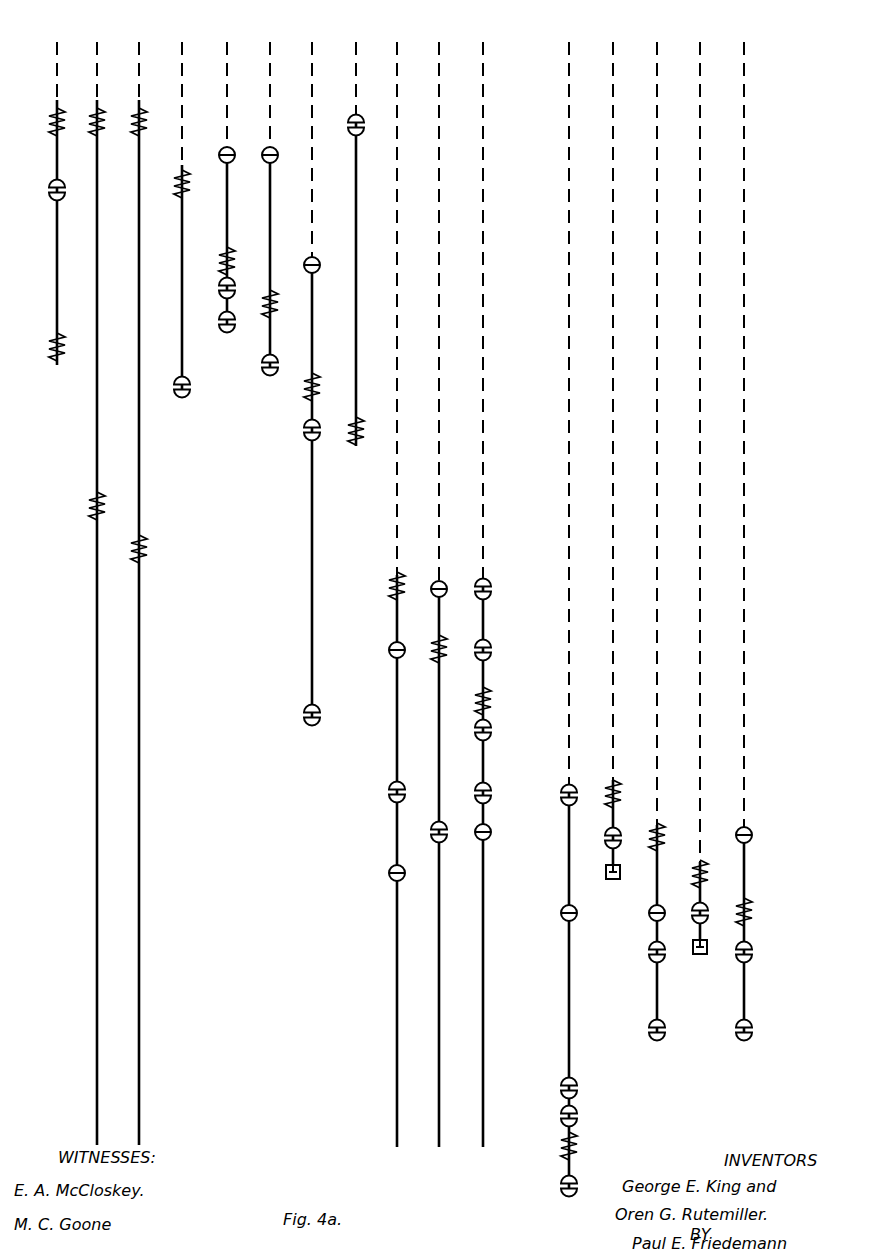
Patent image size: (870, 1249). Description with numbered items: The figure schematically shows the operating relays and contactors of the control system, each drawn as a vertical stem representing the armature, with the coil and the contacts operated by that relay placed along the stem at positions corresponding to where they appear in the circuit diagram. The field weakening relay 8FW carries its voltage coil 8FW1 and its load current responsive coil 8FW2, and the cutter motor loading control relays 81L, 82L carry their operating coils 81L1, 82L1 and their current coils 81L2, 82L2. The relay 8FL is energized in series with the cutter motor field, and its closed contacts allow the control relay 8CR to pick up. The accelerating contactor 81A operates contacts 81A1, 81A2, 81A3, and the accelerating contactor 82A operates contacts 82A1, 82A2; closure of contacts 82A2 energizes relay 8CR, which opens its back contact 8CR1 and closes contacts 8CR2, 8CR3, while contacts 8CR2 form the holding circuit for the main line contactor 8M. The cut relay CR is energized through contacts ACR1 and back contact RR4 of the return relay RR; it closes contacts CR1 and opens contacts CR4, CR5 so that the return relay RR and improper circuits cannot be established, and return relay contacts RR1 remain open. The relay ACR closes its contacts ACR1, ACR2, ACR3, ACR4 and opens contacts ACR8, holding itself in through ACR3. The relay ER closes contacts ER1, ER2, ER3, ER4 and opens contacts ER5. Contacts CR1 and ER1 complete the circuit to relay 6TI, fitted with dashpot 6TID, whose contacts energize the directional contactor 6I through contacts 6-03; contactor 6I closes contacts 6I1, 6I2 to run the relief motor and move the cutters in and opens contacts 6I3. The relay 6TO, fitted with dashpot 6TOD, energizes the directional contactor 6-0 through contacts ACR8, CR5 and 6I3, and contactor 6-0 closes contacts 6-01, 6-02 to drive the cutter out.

The field weakening relay 8FW is at (42, 208).
The voltage coil of relay 8FW 8FW1 is at (53, 362).
The current coil of relay 8FW 8FW2 is at (56, 136).
The cutter motor loading control relay 81L is at (98, 581).
The operating coil of relay 81L 81L1 is at (89, 507).
The load current responsive coil of relay 81L 81L2 is at (99, 137).
The cutter motor loading control relay 82L is at (139, 581).
The operating coil of relay 82L 82L1 is at (147, 550).
The load current responsive coil of relay 82L 82L2 is at (142, 137).
The field loss relay 8FL is at (174, 400).
The accelerating contactor 81A is at (231, 258).
The contacts of contactor 81A 81A1 is at (243, 282).
The contacts of contactor 81A 81A2 is at (226, 331).
The contacts of contactor 81A 81A3 is at (230, 149).
The accelerating contactor 82A is at (282, 320).
The contacts of contactor 82A 82A1 is at (279, 154).
The contacts of contactor 82A 82A2 is at (274, 382).
The control relay 8CR is at (316, 384).
The back contact of relay 8CR 8CR1 is at (318, 263).
The contacts of relay 8CR 8CR2 is at (303, 431).
The contacts of relay 8CR 8CR3 is at (308, 724).
The main line contactor 8M is at (364, 458).
The cut relay CR is at (374, 605).
The contacts of cut relay CR CR1 is at (390, 793).
The contacts of cut relay CR CR4 is at (390, 653).
The contacts of cut relay CR CR5 is at (389, 873).
The return relay RR is at (444, 652).
The contacts of return relay RR RR1 is at (447, 839).
The back contact of return relay RR RR4 is at (446, 587).
The automatic cycle relay ACR is at (491, 701).
The contacts of relay ACR ACR1 is at (491, 588).
The contacts of relay ACR ACR2 is at (491, 652).
The contacts of relay ACR ACR3 is at (492, 736).
The contacts of relay ACR ACR4 is at (489, 802).
The contacts of relay ACR ACR8 is at (490, 840).
The relay ER is at (548, 1148).
The contacts of relay ER ER1 is at (575, 790).
The contacts of relay ER ER2 is at (560, 1091).
The contacts of relay ER ER3 is at (578, 1119).
The contacts of relay ER ER4 is at (560, 1186).
The contacts of relay ER ER5 is at (560, 914).
The relay 6TI is at (619, 838).
The dashpot 6TID is at (621, 878).
The directional contactor 6I is at (664, 839).
The contacts of contactor 6I 6I1 is at (648, 952).
The contacts of contactor 6I 6I2 is at (652, 1038).
The contacts of contactor 6I 6I3 is at (648, 913).
The relay 6TO is at (707, 913).
The dashpot 6TOD is at (697, 955).
The directional contactor 6-0 is at (762, 914).
The contacts of contactor 6-0 6-01 is at (752, 1030).
The contacts of contactor 6-0 6-02 is at (752, 952).
The contacts of contactor 6-0 6-03 is at (752, 836).